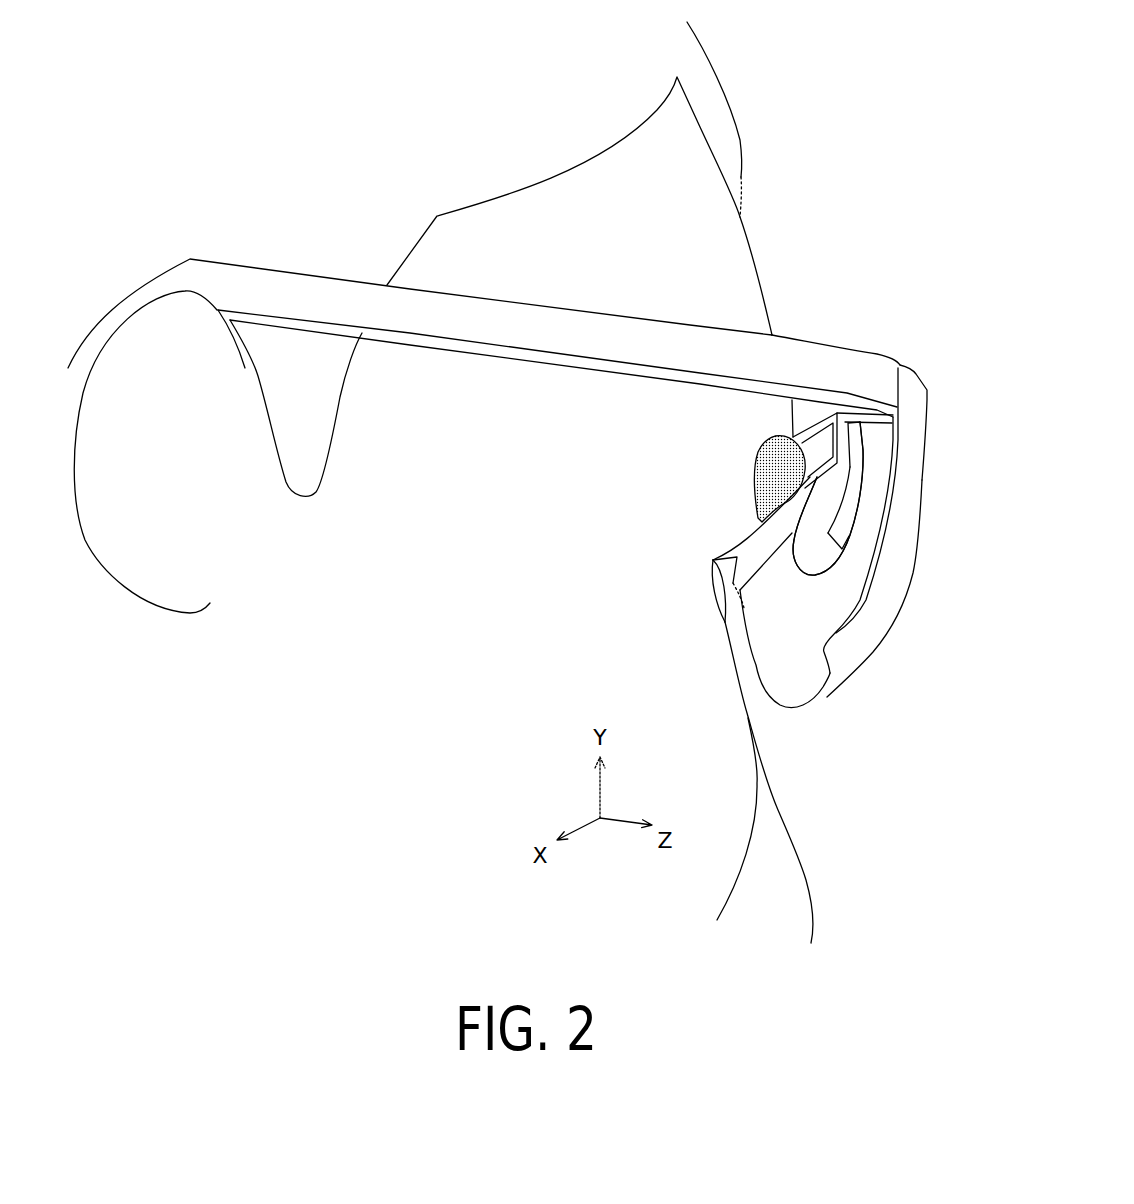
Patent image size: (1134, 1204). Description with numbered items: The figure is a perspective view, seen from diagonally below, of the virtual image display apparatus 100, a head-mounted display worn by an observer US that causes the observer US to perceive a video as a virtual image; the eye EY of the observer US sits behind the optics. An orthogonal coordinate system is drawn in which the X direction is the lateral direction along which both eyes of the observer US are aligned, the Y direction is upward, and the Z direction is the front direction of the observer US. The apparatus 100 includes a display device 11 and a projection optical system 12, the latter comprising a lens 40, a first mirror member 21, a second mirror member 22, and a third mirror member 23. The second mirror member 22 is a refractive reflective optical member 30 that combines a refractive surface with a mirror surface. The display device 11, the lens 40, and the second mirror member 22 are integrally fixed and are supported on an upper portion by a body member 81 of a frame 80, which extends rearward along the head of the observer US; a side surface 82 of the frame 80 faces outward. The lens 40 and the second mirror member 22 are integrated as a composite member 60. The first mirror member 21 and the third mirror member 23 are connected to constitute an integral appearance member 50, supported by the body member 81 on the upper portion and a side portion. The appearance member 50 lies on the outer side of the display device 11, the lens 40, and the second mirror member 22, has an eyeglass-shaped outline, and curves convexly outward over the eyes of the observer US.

The virtual image display apparatus 100 is at (875, 322).
The frame 80 is at (733, 320).
The body member 81 is at (840, 410).
The temple side surface 82 is at (667, 350).
The display device 11 is at (810, 450).
The lens 40 is at (857, 450).
The projection optical system 12 is at (932, 430).
The composite member 60 is at (877, 485).
The first mirror member 21 is at (880, 507).
The second mirror member 22 is at (847, 520).
The refractive reflective optical member 30 is at (888, 506).
The appearance member 50 is at (918, 590).
The third mirror member 23 is at (815, 635).
The observer US is at (770, 323).
The eye EY is at (712, 582).